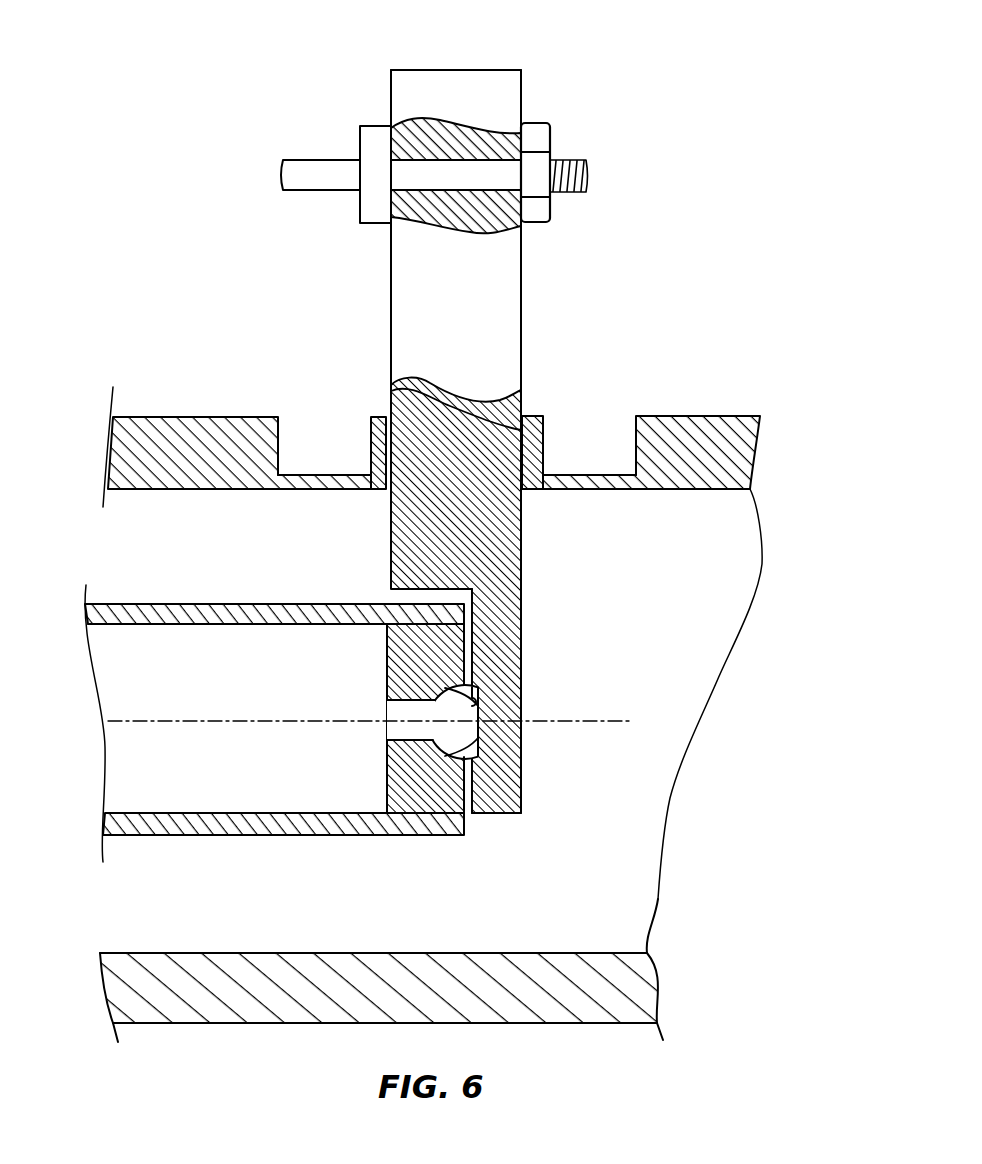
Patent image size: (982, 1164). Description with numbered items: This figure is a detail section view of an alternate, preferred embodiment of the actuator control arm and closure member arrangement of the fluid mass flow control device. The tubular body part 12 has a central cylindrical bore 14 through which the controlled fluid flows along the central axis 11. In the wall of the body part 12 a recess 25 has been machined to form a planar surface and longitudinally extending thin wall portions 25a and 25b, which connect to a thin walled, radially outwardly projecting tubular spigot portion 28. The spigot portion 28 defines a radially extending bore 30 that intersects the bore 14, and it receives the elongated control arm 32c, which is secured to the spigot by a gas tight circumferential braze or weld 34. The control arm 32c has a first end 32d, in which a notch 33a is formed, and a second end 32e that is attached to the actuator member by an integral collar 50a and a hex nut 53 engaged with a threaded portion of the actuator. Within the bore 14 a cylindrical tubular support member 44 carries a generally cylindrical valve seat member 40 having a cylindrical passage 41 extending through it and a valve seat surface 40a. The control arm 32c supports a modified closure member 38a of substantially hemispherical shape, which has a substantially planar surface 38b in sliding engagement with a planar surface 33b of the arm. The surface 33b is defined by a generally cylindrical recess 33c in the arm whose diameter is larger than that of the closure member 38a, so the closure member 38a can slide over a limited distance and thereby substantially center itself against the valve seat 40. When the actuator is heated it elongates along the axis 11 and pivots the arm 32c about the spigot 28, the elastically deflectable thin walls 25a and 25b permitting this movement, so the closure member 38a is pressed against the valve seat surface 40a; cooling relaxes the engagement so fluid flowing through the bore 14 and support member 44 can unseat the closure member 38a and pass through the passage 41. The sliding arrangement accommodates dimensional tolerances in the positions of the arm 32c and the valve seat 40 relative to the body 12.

The central axis 11 is at (593, 717).
The tubular body part 12 is at (613, 1024).
The central cylindrical bore 14 is at (648, 953).
The recess 25 is at (636, 450).
The thin wall portion 25a is at (333, 477).
The thin wall portion 25b is at (575, 468).
The tubular spigot portion 28 is at (543, 427).
The radially extending bore 30 is at (457, 403).
The control arm 32c is at (522, 260).
The first end 32d is at (498, 815).
The second end 32e is at (521, 80).
The notch 33a is at (464, 793).
The planar surface 33b is at (474, 704).
The cylindrical recess 33c is at (443, 748).
The braze or weld 34 is at (387, 417).
The closure member 38a is at (440, 694).
The planar surface 38b is at (483, 736).
The valve seat member 40 is at (387, 798).
The valve seat surface 40a is at (479, 731).
The cylindrical passage 41 is at (450, 686).
The tubular support member 44 is at (318, 604).
The integral collar 50a is at (360, 137).
The hex nut 53 is at (552, 137).